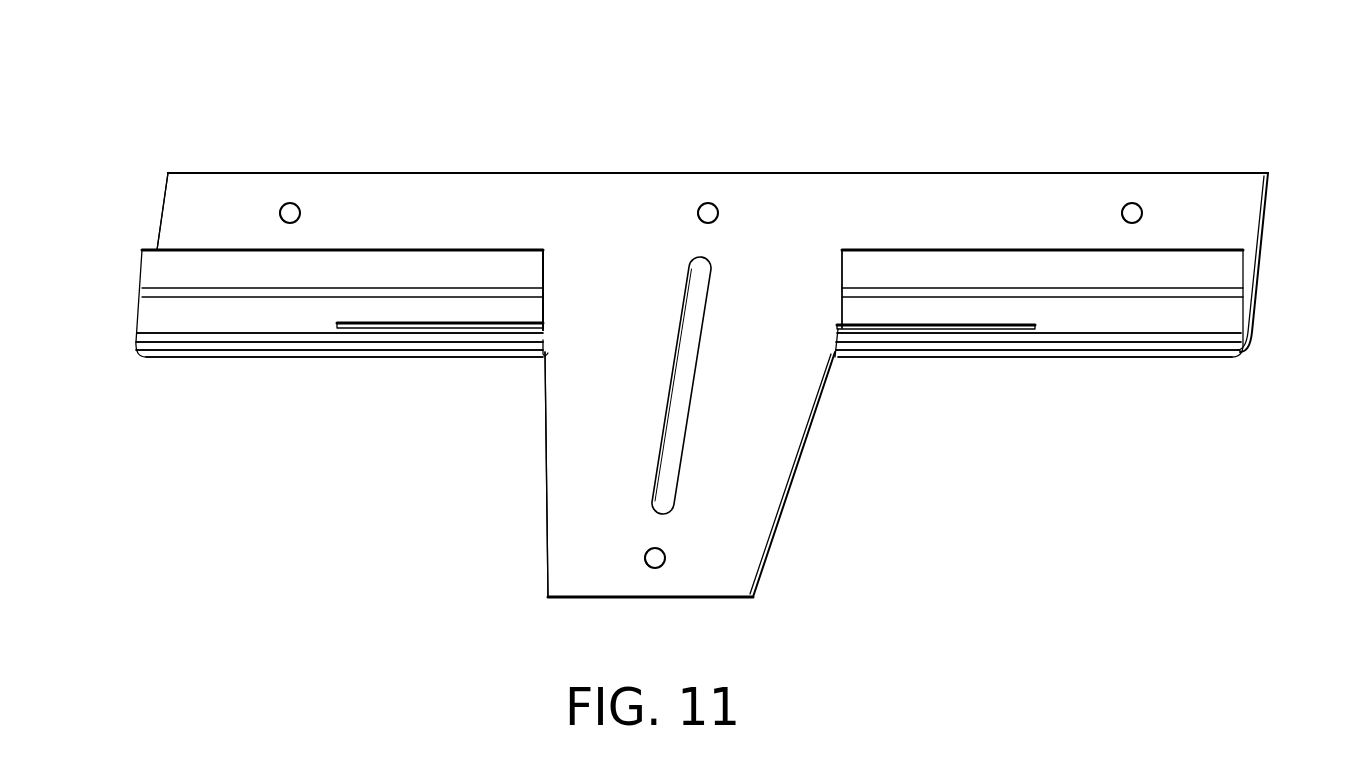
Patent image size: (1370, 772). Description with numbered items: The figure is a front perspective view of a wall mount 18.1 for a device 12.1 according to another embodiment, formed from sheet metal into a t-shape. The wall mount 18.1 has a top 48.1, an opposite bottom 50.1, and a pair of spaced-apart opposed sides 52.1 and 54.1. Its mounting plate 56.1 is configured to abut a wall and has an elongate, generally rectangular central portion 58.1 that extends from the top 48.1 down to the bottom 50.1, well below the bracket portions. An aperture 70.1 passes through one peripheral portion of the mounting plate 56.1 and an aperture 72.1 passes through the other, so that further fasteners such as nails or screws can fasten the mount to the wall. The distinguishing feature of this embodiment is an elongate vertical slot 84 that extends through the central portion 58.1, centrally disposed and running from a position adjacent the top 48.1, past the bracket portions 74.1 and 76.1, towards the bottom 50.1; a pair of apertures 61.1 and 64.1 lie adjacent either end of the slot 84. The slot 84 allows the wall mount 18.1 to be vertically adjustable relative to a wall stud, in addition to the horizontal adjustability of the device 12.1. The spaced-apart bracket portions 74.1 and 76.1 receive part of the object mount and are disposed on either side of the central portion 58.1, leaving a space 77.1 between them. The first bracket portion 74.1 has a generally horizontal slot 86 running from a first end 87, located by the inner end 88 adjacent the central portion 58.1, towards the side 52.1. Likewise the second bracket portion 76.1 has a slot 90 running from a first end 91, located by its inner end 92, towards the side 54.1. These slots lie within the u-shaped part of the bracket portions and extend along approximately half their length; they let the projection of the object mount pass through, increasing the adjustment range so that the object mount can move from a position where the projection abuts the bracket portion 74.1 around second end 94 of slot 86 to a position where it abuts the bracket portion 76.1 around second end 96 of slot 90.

The device 12.1 is at (1122, 78).
The wall mount 18.1 is at (1158, 161).
The top 48.1 is at (455, 173).
The bottom 50.1 is at (568, 600).
The side 52.1 is at (167, 200).
The side 54.1 is at (1268, 217).
The mounting plate 56.1 is at (778, 196).
The central portion 58.1 is at (660, 308).
The aperture 61.1 is at (718, 213).
The aperture 64.1 is at (666, 553).
The aperture 70.1 is at (290, 202).
The aperture 72.1 is at (1129, 202).
The first bracket portion 74.1 is at (270, 370).
The second bracket portion 76.1 is at (1043, 370).
The space 77.1 is at (567, 355).
The slot 84 is at (700, 383).
The slot 86 is at (398, 339).
The first end 87 is at (545, 332).
The inner end 88 is at (545, 301).
The slot 90 is at (917, 339).
The first end 91 is at (838, 327).
The inner end 92 is at (840, 315).
The second end 94 is at (340, 325).
The second end 96 is at (1036, 325).